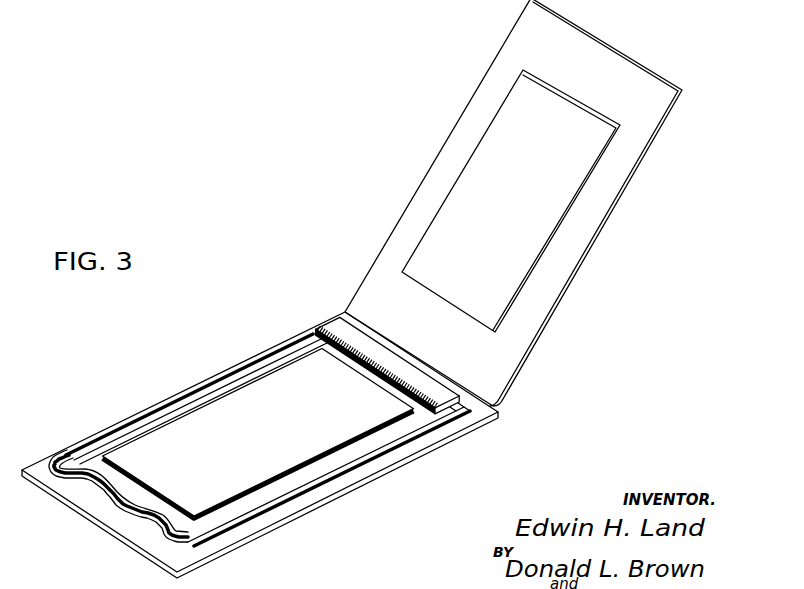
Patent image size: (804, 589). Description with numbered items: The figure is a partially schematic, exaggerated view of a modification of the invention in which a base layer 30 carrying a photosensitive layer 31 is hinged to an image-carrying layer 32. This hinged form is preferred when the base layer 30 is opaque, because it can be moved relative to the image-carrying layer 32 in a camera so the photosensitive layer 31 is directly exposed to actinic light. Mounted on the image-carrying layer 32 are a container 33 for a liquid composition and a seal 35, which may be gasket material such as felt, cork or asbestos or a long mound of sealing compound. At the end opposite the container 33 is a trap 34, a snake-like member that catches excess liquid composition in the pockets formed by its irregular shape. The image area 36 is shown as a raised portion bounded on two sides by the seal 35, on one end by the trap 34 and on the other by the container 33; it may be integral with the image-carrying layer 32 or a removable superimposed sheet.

The base layer 30 is at (578, 25).
The photosensitive layer 31 is at (496, 134).
The image-carrying layer 32 is at (295, 507).
The container 33 is at (356, 334).
The trap 34 is at (78, 482).
The seal 35 is at (398, 435).
The image area 36 is at (296, 386).